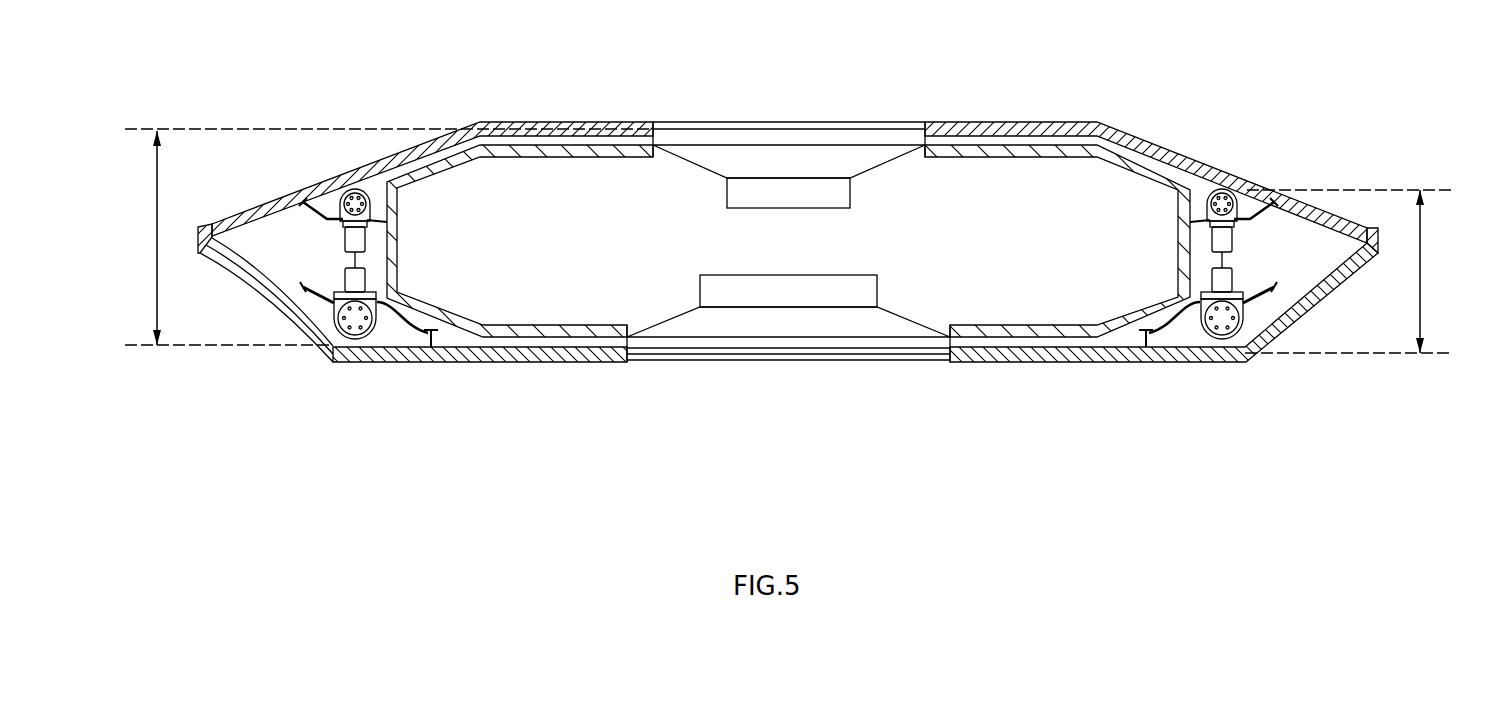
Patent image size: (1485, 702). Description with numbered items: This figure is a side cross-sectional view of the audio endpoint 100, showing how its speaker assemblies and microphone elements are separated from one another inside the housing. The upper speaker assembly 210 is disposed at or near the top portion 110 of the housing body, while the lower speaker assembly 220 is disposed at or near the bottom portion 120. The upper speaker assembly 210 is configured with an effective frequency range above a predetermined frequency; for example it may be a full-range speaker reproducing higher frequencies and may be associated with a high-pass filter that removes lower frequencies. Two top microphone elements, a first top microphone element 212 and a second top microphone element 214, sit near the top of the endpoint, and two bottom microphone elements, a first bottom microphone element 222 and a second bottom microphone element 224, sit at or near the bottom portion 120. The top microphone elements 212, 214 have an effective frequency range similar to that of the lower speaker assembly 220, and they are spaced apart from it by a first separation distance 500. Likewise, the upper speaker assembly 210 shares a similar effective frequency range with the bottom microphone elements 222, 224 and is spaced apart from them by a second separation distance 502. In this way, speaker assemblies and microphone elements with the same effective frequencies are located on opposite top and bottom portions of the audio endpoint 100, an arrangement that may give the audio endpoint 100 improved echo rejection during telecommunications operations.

The audio endpoint 100 is at (343, 66).
The top portion 110 is at (565, 122).
The bottom portion 120 is at (517, 363).
The upper speaker assembly 210 is at (873, 167).
The first top microphone element 212 is at (345, 190).
The second top microphone element 214 is at (1213, 190).
The lower speaker assembly 220 is at (907, 317).
The first bottom microphone element 222 is at (367, 343).
The second bottom microphone element 224 is at (1247, 330).
The first separation distance 500 is at (1421, 303).
The second separation distance 502 is at (157, 280).